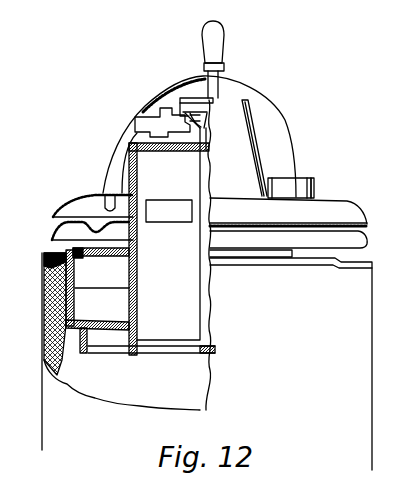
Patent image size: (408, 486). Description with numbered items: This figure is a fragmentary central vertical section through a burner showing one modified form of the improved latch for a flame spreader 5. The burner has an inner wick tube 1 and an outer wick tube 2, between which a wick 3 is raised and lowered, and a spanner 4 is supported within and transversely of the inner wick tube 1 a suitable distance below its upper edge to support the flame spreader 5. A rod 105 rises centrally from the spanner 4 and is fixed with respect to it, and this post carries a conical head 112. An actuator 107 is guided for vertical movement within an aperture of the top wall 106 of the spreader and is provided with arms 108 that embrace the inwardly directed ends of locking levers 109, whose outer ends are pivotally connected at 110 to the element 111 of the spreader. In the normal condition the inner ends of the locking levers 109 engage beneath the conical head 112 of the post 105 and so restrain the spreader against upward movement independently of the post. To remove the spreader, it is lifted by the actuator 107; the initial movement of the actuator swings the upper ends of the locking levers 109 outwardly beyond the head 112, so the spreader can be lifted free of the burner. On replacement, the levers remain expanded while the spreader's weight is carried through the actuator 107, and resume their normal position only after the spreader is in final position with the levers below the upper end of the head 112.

The inner wick tube 1 is at (68, 368).
The outer wick tube 2 is at (50, 425).
The wick 3 is at (50, 293).
The spanner 4 is at (113, 359).
The flame spreader 5 is at (296, 172).
The rod 105 is at (207, 192).
The top wall 106 is at (254, 90).
The actuator 107 is at (227, 63).
The arms 108 is at (197, 98).
The locking levers 109 is at (140, 118).
The pivotal connection 110 is at (105, 197).
The element of the spreader 111 is at (80, 199).
The conical head 112 is at (212, 118).